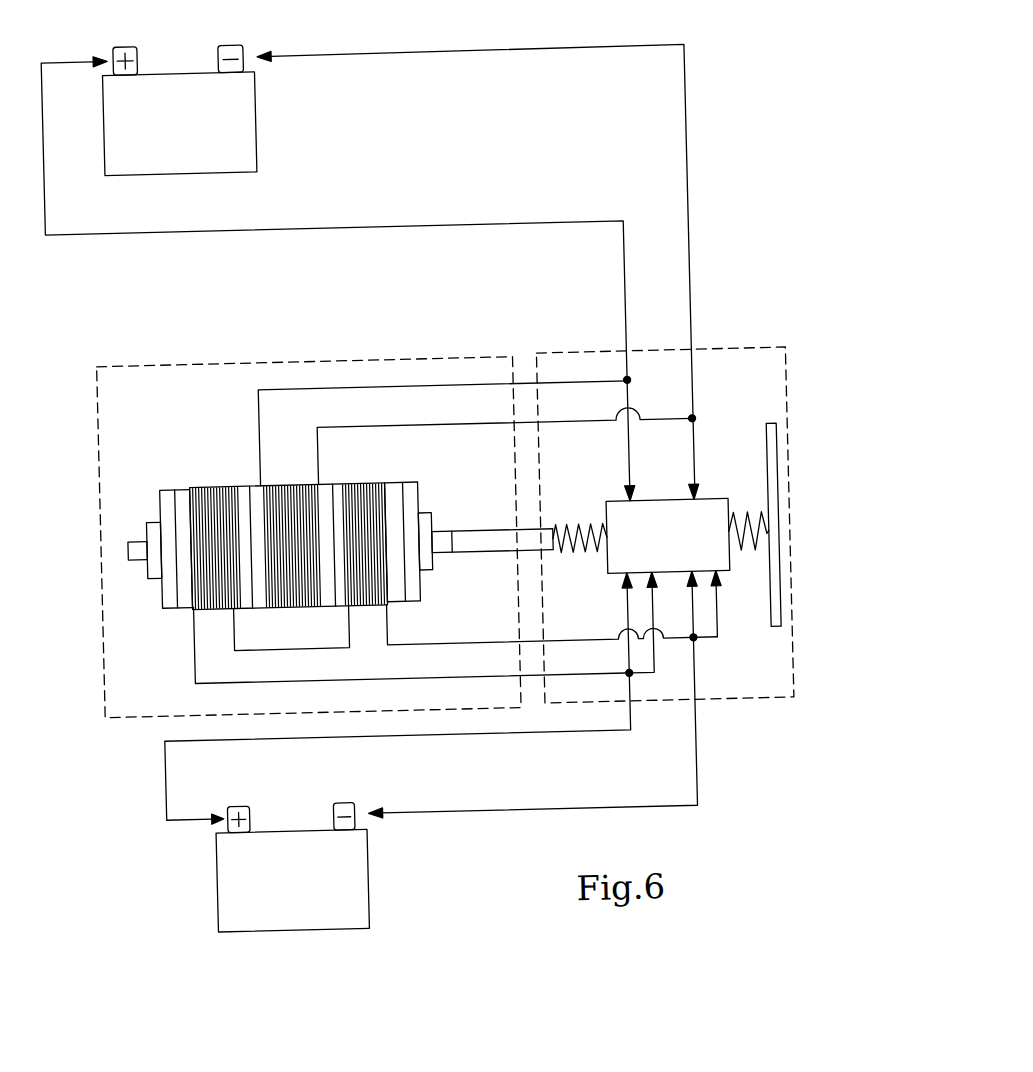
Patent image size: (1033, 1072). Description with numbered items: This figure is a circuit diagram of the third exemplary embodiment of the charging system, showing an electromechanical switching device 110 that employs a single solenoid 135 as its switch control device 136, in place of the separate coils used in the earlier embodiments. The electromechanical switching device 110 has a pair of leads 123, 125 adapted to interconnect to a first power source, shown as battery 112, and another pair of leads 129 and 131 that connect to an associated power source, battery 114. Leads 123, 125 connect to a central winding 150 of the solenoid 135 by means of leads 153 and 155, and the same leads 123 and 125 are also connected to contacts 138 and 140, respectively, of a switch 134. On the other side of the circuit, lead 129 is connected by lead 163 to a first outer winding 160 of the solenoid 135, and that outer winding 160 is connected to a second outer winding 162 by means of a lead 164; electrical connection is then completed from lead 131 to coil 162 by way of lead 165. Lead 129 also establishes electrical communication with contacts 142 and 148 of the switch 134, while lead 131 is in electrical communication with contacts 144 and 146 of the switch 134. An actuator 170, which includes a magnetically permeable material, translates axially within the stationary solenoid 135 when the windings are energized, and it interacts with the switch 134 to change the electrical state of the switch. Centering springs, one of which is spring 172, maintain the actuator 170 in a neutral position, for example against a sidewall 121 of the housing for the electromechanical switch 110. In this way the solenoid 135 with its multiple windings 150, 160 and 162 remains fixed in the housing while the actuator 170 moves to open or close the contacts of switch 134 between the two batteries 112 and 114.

The electromechanical switching device 110 is at (500, 176).
The battery 112 is at (247, 123).
The battery 114 is at (341, 874).
The sidewall 121 is at (786, 464).
The lead 123 is at (337, 224).
The lead 125 is at (398, 49).
The lead 129 is at (401, 733).
The lead 131 is at (399, 813).
The switch 134 is at (735, 357).
The solenoid 135 is at (281, 522).
The switch control device 136 is at (132, 391).
The contact 138 is at (632, 504).
The contact 140 is at (700, 500).
The contact 142 is at (625, 611).
The contact 144 is at (690, 574).
The contact 146 is at (723, 597).
The contact 148 is at (648, 574).
The central winding 150 is at (260, 481).
The lead 153 is at (353, 382).
The lead 155 is at (339, 425).
The first outer winding 160 is at (190, 512).
The second outer winding 162 is at (382, 482).
The lead 163 is at (191, 652).
The lead 164 is at (249, 644).
The lead 165 is at (390, 640).
The actuator 170 is at (503, 532).
The centering spring 172 is at (576, 527).